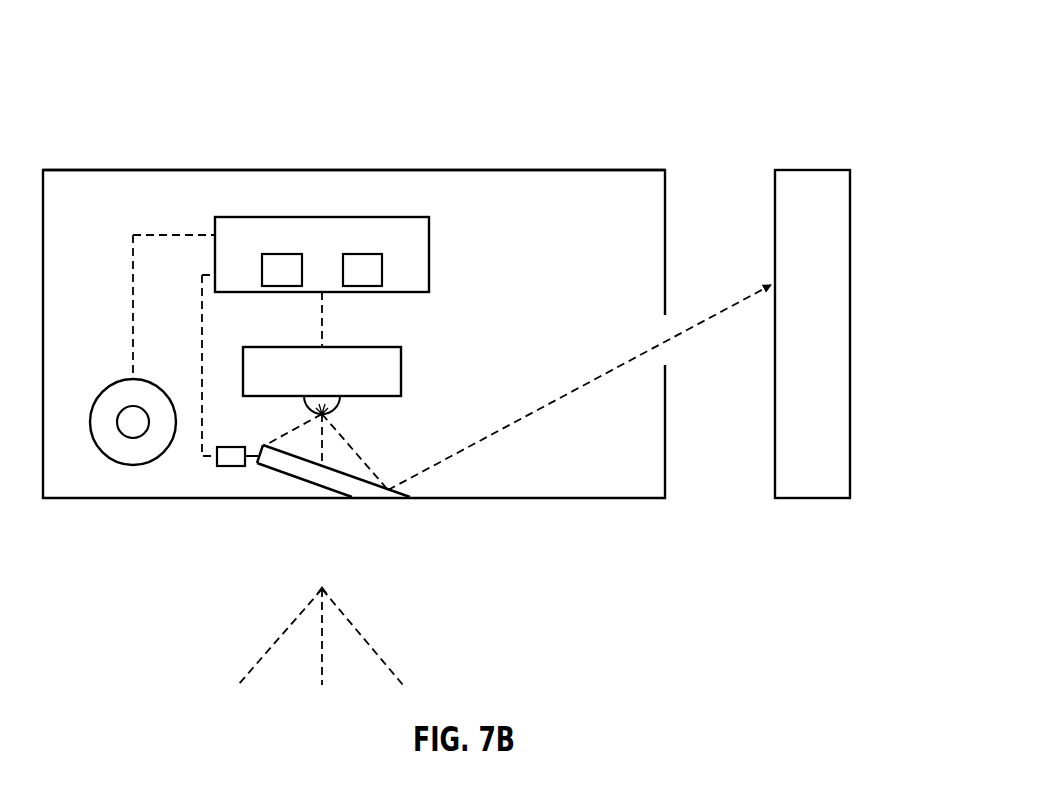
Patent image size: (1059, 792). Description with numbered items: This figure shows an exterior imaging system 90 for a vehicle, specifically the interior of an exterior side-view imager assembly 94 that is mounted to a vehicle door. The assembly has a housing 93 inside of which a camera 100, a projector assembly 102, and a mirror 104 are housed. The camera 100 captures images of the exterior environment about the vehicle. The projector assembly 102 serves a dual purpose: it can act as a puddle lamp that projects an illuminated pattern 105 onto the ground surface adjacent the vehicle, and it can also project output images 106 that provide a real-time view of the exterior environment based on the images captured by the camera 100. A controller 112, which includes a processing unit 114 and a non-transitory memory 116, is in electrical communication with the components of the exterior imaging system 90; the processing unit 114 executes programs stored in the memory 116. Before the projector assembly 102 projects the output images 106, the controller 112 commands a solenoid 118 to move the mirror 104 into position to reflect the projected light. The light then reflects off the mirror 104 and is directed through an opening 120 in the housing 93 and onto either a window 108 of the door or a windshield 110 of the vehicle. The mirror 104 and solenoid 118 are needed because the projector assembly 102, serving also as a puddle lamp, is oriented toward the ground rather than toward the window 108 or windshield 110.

The exterior imaging system 90 is at (664, 81).
The housing 93 is at (110, 170).
The exterior side-view imager assembly 94 is at (174, 166).
The camera 100 is at (133, 379).
The projector assembly 102 is at (401, 370).
The mirror 104 is at (320, 478).
The illuminated pattern 105 is at (278, 610).
The output images 106 is at (707, 318).
The window 108 is at (831, 299).
The windshield 110 is at (811, 197).
The controller 112 is at (430, 253).
The processing unit 114 is at (282, 287).
The memory 116 is at (362, 287).
The solenoid 118 is at (232, 467).
The opening 120 is at (668, 348).